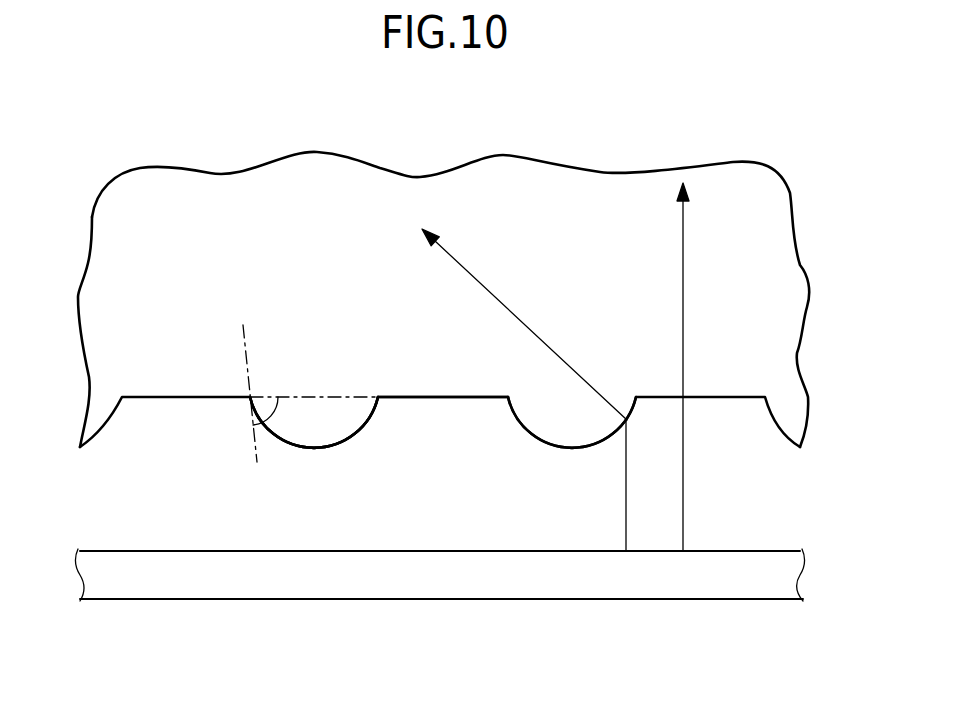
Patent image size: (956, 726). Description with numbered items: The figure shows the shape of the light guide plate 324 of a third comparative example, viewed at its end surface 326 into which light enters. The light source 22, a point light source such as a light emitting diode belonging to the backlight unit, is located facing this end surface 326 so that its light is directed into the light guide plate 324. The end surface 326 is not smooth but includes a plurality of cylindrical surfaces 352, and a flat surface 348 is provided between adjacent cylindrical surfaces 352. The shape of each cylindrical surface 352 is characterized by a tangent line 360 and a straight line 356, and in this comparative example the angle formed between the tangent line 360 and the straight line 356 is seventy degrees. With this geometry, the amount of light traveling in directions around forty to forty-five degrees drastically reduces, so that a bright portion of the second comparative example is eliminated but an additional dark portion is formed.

The light source 22 is at (767, 587).
The light guide plate 324 is at (527, 178).
The end surface 326 is at (359, 465).
The flat surface 348 is at (440, 397).
The cylindrical surface 352 is at (313, 450).
The straight line 356 is at (326, 395).
The tangent line 360 is at (246, 352).